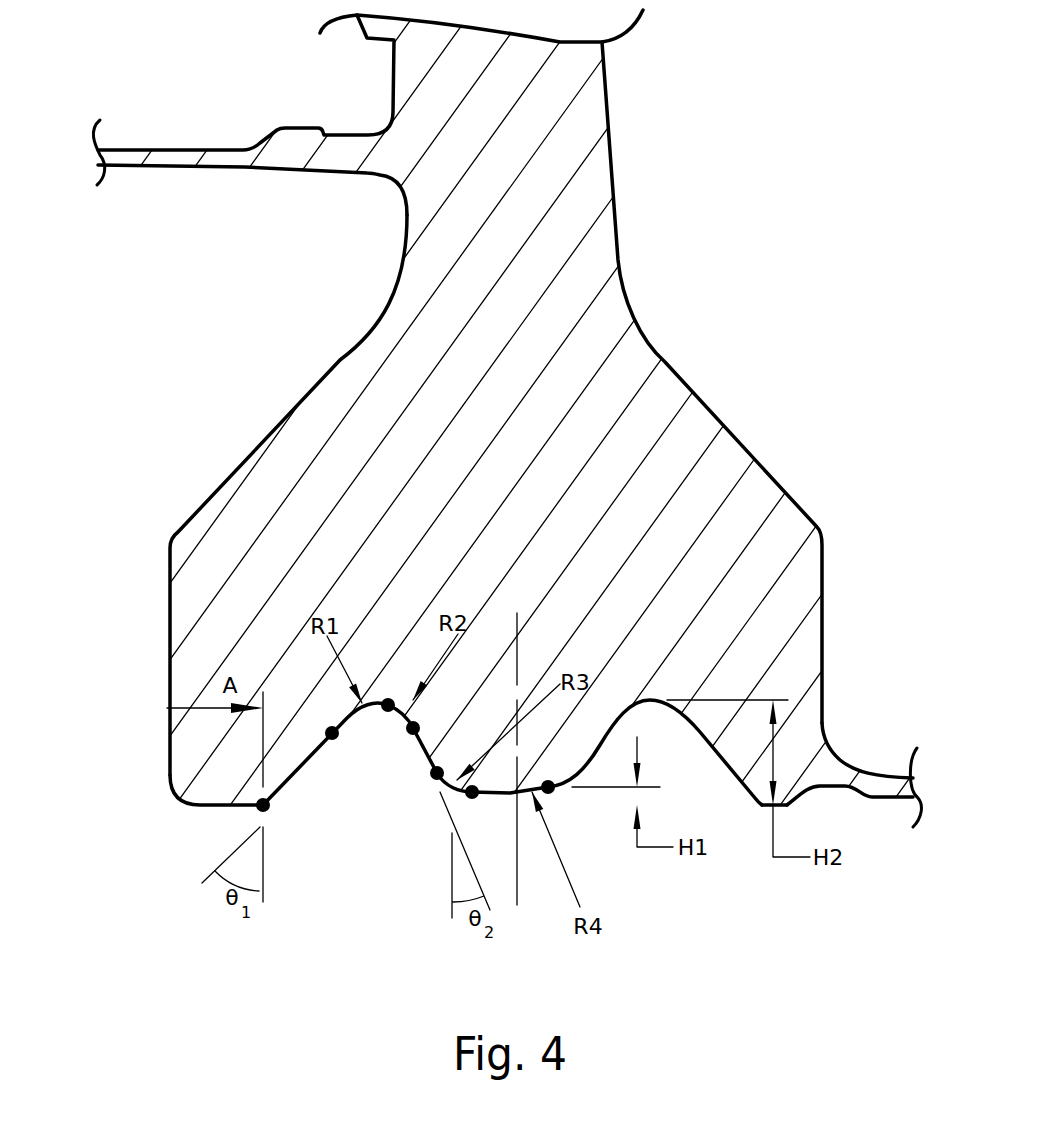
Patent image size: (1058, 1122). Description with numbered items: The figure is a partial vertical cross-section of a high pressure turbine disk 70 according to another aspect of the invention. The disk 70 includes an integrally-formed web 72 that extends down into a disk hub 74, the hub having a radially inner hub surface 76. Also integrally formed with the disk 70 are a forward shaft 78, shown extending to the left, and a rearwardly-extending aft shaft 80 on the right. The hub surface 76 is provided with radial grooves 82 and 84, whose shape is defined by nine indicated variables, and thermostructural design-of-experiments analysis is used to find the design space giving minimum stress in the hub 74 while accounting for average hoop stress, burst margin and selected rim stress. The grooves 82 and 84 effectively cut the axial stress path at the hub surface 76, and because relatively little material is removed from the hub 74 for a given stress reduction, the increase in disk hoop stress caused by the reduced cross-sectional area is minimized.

The disk 70 is at (192, 424).
The web 72 is at (593, 118).
The disk hub 74 is at (188, 603).
The hub surface 76 is at (213, 808).
The forward shaft 78 is at (163, 157).
The aft shaft 80 is at (875, 785).
The radial groove 82 is at (344, 722).
The radial groove 84 is at (724, 767).